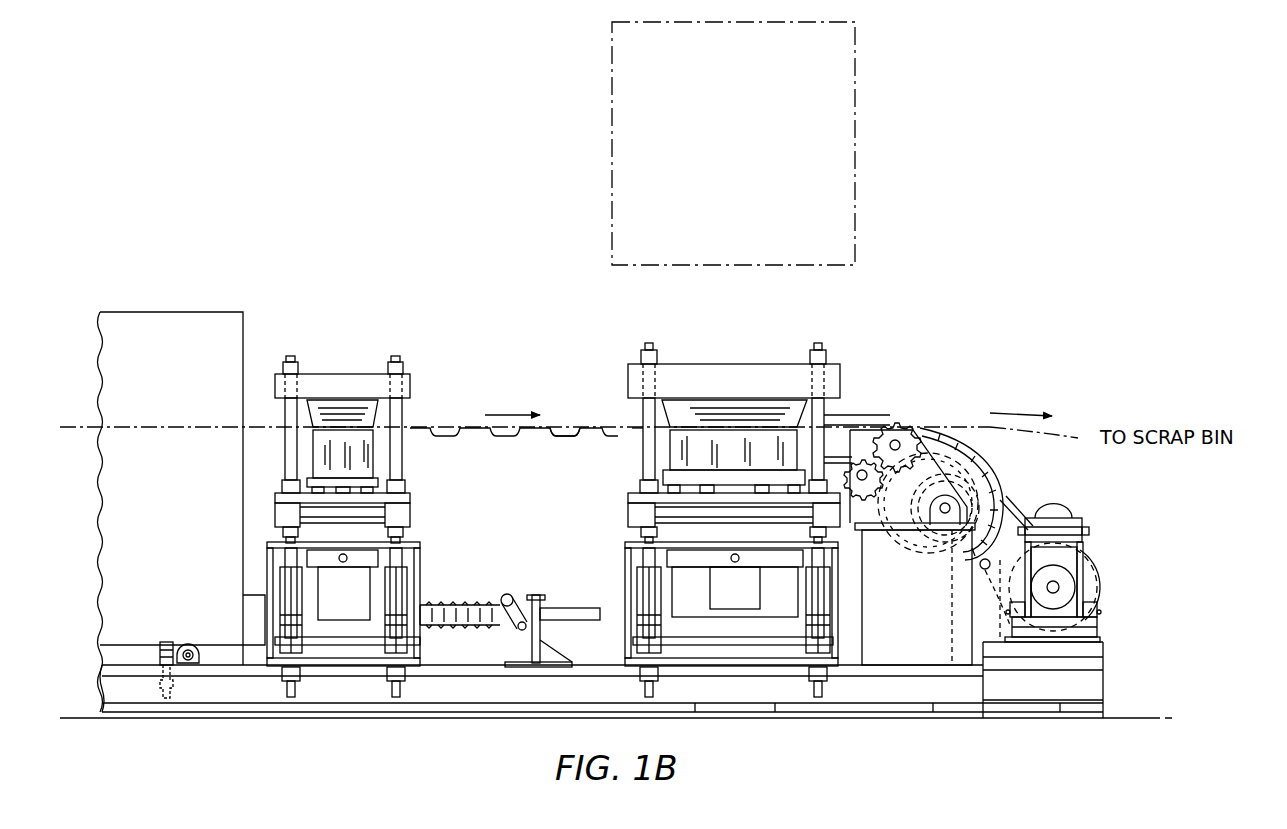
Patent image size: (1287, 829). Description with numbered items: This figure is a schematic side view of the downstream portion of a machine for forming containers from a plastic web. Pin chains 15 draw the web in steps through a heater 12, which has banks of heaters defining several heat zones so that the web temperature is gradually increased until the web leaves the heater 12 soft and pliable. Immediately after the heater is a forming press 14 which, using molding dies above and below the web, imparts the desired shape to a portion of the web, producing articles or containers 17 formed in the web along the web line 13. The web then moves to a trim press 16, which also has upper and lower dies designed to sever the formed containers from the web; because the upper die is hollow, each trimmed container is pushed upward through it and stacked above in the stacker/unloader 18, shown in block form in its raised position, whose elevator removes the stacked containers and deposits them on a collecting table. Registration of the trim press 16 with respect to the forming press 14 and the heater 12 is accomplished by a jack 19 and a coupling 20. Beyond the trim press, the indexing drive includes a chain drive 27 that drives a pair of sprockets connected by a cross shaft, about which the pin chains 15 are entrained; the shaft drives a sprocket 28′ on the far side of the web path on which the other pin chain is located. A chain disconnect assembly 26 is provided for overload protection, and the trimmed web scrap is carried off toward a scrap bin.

The heater unit 12 is at (204, 374).
The web line 13 is at (617, 434).
The forming press 14 is at (400, 358).
The pin chains 15 is at (967, 455).
The trim press 16 is at (791, 364).
The articles or containers 17 is at (590, 430).
The stacker/unloader 18 is at (733, 143).
The jack 19 is at (526, 599).
The coupling 20 is at (252, 650).
The chain disconnect assembly 26 is at (1102, 594).
The chain drive 27 is at (1016, 512).
The sprocket 28′ is at (912, 548).